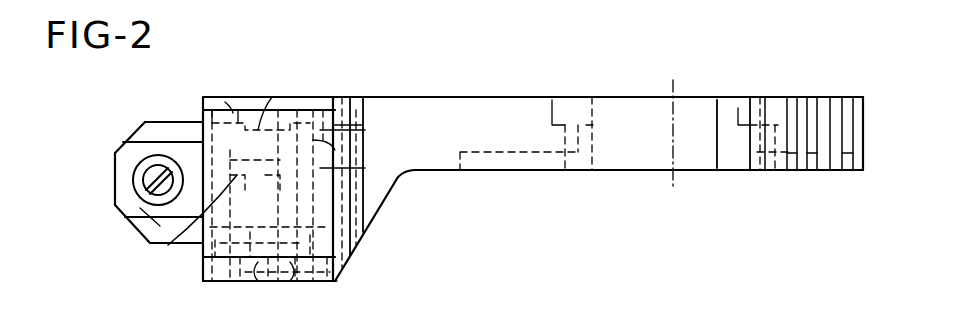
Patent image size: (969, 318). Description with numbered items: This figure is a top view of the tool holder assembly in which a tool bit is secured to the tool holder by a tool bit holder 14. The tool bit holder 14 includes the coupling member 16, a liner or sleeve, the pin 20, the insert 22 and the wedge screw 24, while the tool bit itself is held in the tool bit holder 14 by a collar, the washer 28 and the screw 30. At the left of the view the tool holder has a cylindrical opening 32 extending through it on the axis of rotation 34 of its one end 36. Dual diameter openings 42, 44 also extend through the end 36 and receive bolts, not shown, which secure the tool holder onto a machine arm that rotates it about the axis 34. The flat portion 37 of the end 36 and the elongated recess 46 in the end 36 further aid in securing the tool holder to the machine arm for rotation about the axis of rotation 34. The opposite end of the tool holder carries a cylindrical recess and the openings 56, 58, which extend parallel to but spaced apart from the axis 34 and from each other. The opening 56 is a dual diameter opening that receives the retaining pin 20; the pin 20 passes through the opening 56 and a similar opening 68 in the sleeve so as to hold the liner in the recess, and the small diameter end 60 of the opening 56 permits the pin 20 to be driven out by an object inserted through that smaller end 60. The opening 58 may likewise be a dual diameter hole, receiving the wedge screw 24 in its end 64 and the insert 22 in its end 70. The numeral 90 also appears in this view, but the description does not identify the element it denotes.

The tool bit holder 14 is at (148, 122).
The coupling member 16 is at (115, 175).
The pin 20 is at (372, 175).
The insert 22 is at (278, 284).
The wedge screw 24 is at (262, 128).
The washer 28 is at (140, 208).
The screw 30 is at (150, 162).
The cylindrical opening 32 is at (593, 90).
The axis of rotation 34 is at (673, 180).
The one end of tool holder 36 is at (802, 97).
The flat portion 37 is at (863, 125).
The opening 42 is at (552, 100).
The opening 44 is at (742, 108).
The elongated recess 46 is at (490, 155).
The opening 56 is at (348, 97).
The opening 58 is at (222, 96).
The small diameter end 60 is at (345, 283).
The end of opening 64 is at (243, 100).
The opening in sleeve 68 is at (370, 128).
The end of opening 70 is at (232, 282).
The diagonal bore 90 is at (172, 244).